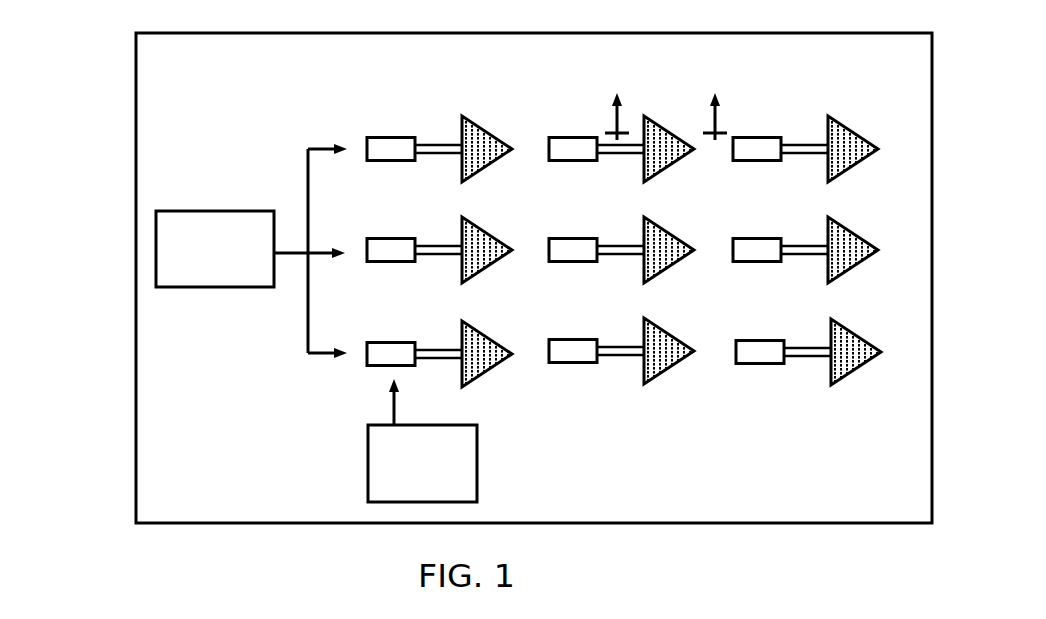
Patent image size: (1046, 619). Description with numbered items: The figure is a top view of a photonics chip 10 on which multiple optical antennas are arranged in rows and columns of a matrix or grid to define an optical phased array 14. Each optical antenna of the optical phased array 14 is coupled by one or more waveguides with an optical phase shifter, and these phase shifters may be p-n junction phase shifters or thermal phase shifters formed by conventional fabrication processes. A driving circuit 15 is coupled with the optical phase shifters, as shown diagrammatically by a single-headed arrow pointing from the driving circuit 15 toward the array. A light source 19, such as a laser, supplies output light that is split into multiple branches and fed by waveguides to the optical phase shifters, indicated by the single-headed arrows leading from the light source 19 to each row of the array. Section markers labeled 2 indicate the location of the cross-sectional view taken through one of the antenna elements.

The photonics chip 10 is at (98, 79).
The optical phased array 14 is at (826, 82).
The driving circuit 15 is at (477, 466).
The light source 19 is at (216, 288).
The section line 2 is at (666, 102).